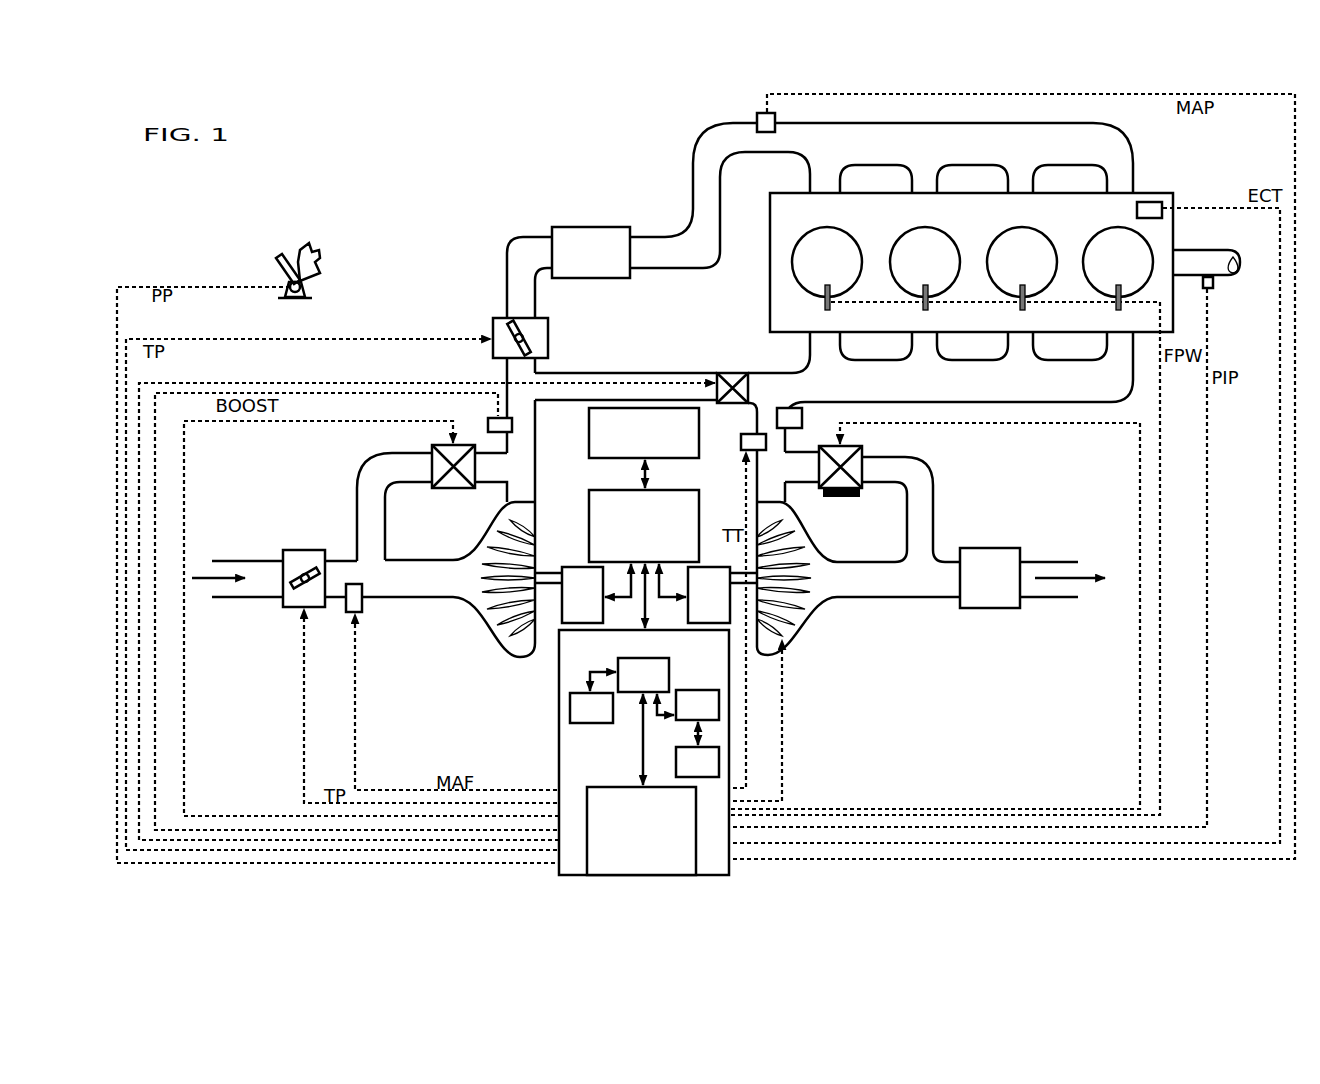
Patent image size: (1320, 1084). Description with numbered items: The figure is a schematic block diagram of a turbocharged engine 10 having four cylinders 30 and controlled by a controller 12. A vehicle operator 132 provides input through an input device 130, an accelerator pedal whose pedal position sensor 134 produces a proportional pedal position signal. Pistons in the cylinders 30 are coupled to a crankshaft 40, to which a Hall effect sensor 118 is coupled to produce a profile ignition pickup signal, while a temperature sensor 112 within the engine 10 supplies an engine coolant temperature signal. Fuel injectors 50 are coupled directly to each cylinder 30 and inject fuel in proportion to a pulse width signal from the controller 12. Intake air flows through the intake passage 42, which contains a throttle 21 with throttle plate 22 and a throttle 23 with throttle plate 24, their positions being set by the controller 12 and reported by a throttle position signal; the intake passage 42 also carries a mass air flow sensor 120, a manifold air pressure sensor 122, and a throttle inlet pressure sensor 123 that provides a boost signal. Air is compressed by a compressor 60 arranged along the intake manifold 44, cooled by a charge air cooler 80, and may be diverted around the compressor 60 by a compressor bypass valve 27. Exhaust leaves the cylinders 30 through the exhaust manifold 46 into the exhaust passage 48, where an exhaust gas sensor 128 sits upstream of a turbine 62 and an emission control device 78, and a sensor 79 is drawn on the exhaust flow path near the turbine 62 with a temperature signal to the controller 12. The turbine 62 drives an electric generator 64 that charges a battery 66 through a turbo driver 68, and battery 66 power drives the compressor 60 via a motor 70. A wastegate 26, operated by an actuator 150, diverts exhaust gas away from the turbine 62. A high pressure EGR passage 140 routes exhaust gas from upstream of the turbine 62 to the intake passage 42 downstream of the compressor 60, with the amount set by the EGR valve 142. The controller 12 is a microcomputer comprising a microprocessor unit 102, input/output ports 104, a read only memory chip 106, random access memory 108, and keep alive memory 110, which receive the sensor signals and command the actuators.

The engine 10 is at (971, 262).
The controller 12 is at (610, 752).
The throttle 21 is at (296, 550).
The throttle plate 22 is at (312, 565).
The throttle 23 is at (503, 318).
The throttle plate 24 is at (528, 353).
The wastegate 26 is at (862, 456).
The compressor bypass valve 27 is at (432, 452).
The cylinder 30 is at (972, 262).
The crankshaft 40 is at (1213, 250).
The intake passage 42 is at (322, 579).
The intake manifold 44 is at (881, 195).
The exhaust manifold 46 is at (940, 417).
The exhaust passage 48 is at (971, 579).
The fuel injector 50 is at (826, 306).
The compressor 60 is at (493, 615).
The turbine 62 is at (792, 530).
The electric generator 64 is at (709, 595).
The battery 66 is at (589, 440).
The turbo driver 68 is at (675, 490).
The motor 70 is at (582, 595).
The emission control device 78 is at (990, 578).
The exhaust temperature sensor 79 is at (745, 440).
The charge air cooler 80 is at (555, 227).
The microprocessor unit 102 is at (618, 663).
The input/output ports 104 is at (641, 784).
The read only memory chip 106 is at (570, 715).
The random access memory 108 is at (690, 690).
The keep alive memory 110 is at (676, 757).
The temperature sensor 112 is at (1150, 202).
The Hall effect sensor 118 is at (1213, 286).
The mass air flow sensor 120 is at (362, 600).
The manifold air pressure sensor 122 is at (757, 118).
The throttle inlet pressure sensor 123 is at (492, 418).
The exhaust gas sensor 128 is at (802, 420).
The input device 130 is at (278, 262).
The vehicle operator 132 is at (318, 256).
The pedal position sensor 134 is at (305, 287).
The EGR passage 140 is at (628, 376).
The EGR valve 142 is at (745, 373).
The actuator 150 is at (850, 493).